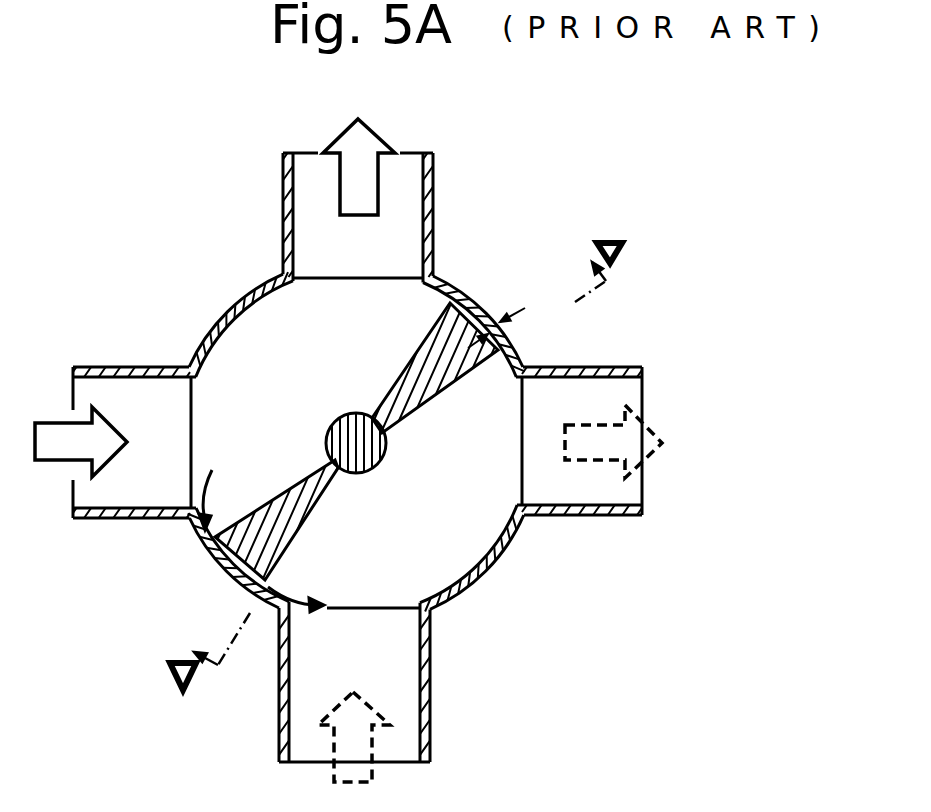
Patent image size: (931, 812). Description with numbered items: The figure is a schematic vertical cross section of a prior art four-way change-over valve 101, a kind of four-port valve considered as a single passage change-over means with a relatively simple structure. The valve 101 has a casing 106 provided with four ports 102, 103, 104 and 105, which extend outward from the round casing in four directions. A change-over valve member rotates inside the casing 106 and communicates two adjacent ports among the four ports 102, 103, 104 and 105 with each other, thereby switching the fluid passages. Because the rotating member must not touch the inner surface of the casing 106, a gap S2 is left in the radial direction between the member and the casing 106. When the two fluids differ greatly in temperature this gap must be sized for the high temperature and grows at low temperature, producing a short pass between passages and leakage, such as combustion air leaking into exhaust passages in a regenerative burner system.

The four-way change-over valve 101 is at (563, 188).
The port 102 is at (133, 385).
The port 103 is at (413, 212).
The port 104 is at (594, 385).
The port 105 is at (410, 675).
The casing 106 is at (210, 548).
The gap S2 is at (520, 337).